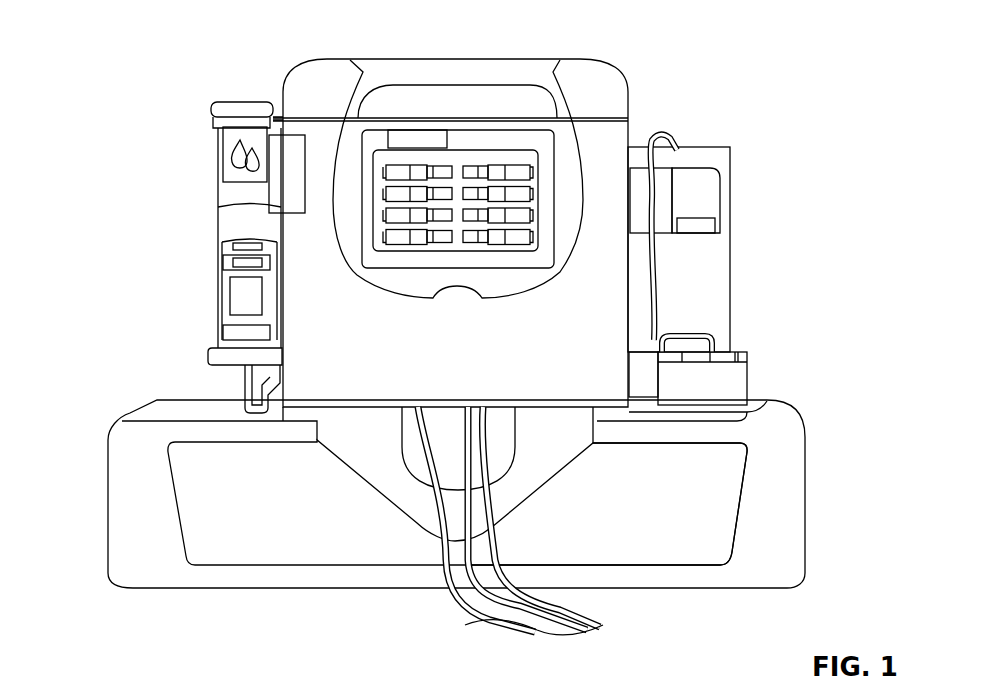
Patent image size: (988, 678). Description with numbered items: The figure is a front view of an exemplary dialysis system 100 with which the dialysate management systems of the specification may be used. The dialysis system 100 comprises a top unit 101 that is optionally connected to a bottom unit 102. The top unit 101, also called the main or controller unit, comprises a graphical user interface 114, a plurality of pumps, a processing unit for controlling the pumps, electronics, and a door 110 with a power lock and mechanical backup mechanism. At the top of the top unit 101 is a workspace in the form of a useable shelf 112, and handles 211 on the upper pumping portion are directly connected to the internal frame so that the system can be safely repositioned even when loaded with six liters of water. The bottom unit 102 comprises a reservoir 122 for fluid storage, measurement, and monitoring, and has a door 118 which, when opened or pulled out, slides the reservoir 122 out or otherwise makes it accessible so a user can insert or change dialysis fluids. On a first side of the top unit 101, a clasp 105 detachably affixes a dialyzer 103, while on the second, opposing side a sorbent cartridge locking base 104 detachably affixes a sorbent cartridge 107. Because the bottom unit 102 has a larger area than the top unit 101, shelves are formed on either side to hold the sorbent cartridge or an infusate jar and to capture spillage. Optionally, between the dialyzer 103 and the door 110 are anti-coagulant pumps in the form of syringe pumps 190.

The dialysis system 100 is at (142, 40).
The top unit 101 is at (397, 120).
The bottom unit 102 is at (122, 488).
The dialyzer 103 is at (216, 300).
The sorbent cartridge locking base 104 is at (667, 392).
The clasp 105 is at (225, 228).
The sorbent cartridge 107 is at (700, 327).
The door 110 is at (628, 166).
The shelf 112 is at (556, 56).
The graphical user interface 114 is at (317, 120).
The door 118 is at (247, 565).
The reservoir 122 is at (677, 547).
The syringe pumps 190 is at (283, 158).
The handles 211 is at (510, 542).